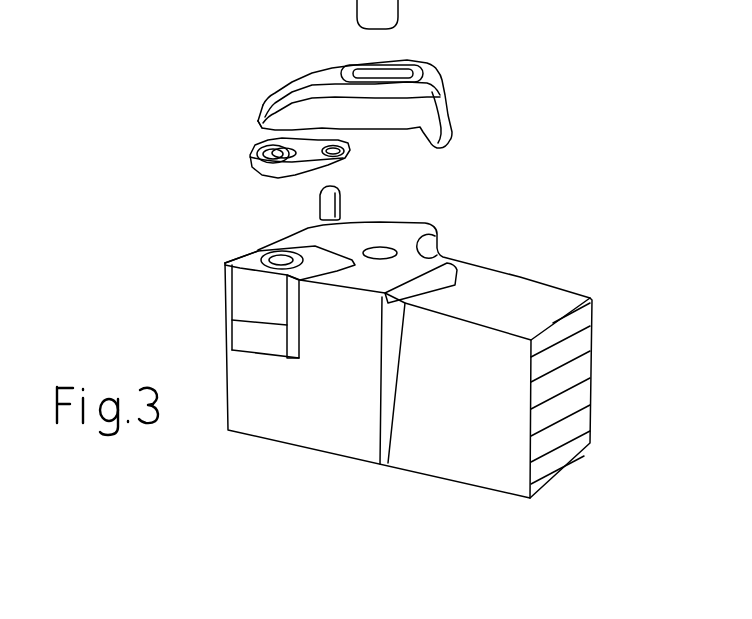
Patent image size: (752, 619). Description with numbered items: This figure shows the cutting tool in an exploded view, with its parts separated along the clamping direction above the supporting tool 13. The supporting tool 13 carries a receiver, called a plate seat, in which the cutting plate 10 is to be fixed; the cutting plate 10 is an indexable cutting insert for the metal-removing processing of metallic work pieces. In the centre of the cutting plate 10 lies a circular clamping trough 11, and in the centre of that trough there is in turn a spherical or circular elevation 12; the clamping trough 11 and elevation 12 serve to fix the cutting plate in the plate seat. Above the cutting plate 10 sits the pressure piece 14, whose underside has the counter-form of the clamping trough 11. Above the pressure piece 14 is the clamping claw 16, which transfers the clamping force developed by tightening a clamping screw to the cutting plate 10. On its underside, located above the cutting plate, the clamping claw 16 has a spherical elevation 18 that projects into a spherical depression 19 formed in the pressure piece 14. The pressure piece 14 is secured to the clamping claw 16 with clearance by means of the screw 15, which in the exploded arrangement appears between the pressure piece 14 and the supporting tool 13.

The cutting plate 10 is at (238, 290).
The clamping trough 11 is at (258, 248).
The elevation 12 is at (283, 255).
The supporting tool 13 is at (343, 438).
The pressure piece 14 is at (272, 171).
The screw 15 is at (338, 200).
The clamping claw 16 is at (445, 100).
The spherical elevation 18 is at (270, 133).
The spherical depression 19 is at (257, 140).